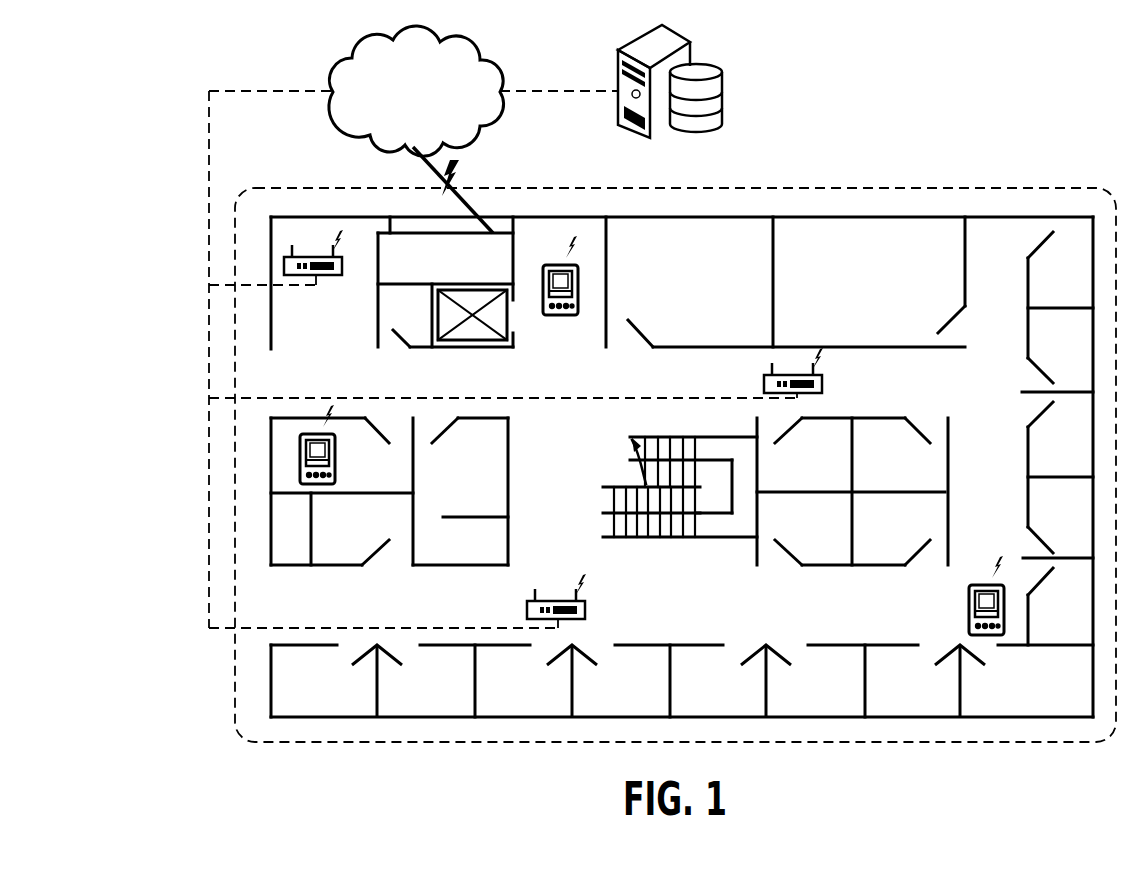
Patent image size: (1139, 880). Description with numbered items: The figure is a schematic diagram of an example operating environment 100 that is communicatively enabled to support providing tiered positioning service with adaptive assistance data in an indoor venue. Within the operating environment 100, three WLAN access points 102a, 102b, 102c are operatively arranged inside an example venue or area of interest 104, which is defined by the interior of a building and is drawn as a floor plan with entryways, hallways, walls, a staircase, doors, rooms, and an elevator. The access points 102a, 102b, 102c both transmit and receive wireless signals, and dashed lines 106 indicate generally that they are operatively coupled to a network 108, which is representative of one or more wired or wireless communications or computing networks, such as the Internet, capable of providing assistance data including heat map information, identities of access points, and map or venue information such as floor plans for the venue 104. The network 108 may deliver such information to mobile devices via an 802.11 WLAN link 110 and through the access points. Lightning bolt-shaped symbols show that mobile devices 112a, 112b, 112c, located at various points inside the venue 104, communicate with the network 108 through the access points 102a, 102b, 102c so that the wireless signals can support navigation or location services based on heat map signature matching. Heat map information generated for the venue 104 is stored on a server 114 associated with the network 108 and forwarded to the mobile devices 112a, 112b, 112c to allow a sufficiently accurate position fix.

The operating environment 100 is at (974, 86).
The WLAN access point 102a is at (329, 277).
The WLAN access point 102b is at (527, 612).
The WLAN access point 102c is at (765, 388).
The venue 104 is at (1033, 188).
The dashed lines 106 is at (208, 228).
The network 108 is at (445, 37).
The link 110 is at (462, 187).
The mobile device 112a is at (337, 460).
The mobile device 112b is at (565, 316).
The mobile device 112c is at (969, 621).
The server 114 is at (675, 32).